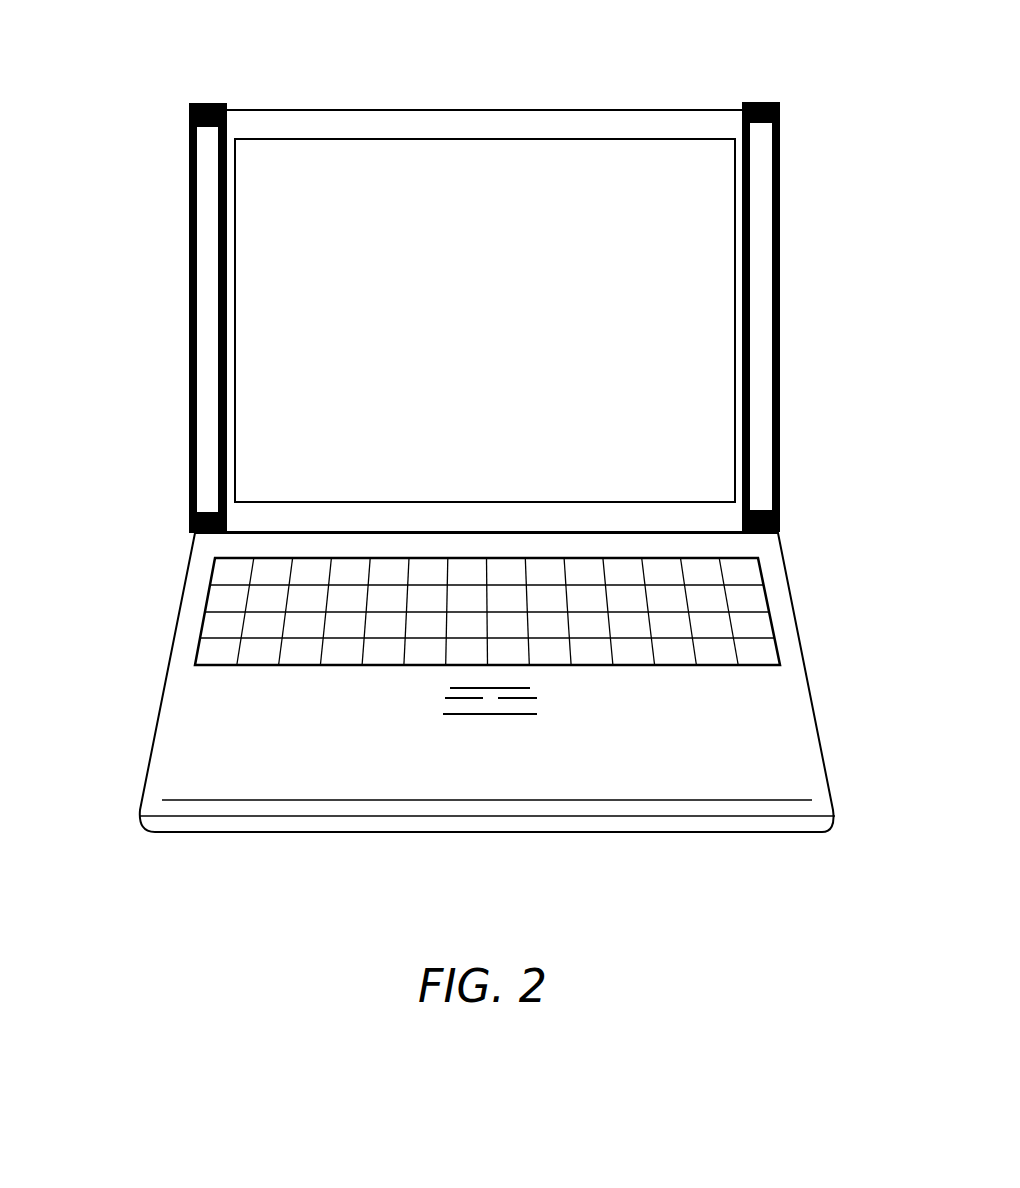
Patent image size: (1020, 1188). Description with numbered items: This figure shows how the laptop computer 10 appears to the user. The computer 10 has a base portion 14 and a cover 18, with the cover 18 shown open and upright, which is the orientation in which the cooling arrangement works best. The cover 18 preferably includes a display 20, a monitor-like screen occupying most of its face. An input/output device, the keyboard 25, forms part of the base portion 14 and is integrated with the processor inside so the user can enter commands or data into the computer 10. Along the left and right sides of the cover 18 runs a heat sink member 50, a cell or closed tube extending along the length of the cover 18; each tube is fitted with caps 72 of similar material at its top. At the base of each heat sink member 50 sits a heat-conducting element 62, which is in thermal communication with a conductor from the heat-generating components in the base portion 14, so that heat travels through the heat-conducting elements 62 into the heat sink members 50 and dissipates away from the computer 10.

The laptop computer 10 is at (469, 506).
The base portion 14 is at (277, 823).
The cover 18 is at (318, 110).
The display 20 is at (630, 268).
The keyboard 25 is at (255, 623).
The heat sink member 50 is at (215, 317).
The heat-conducting element 62 is at (192, 525).
The cap 72 is at (217, 102).